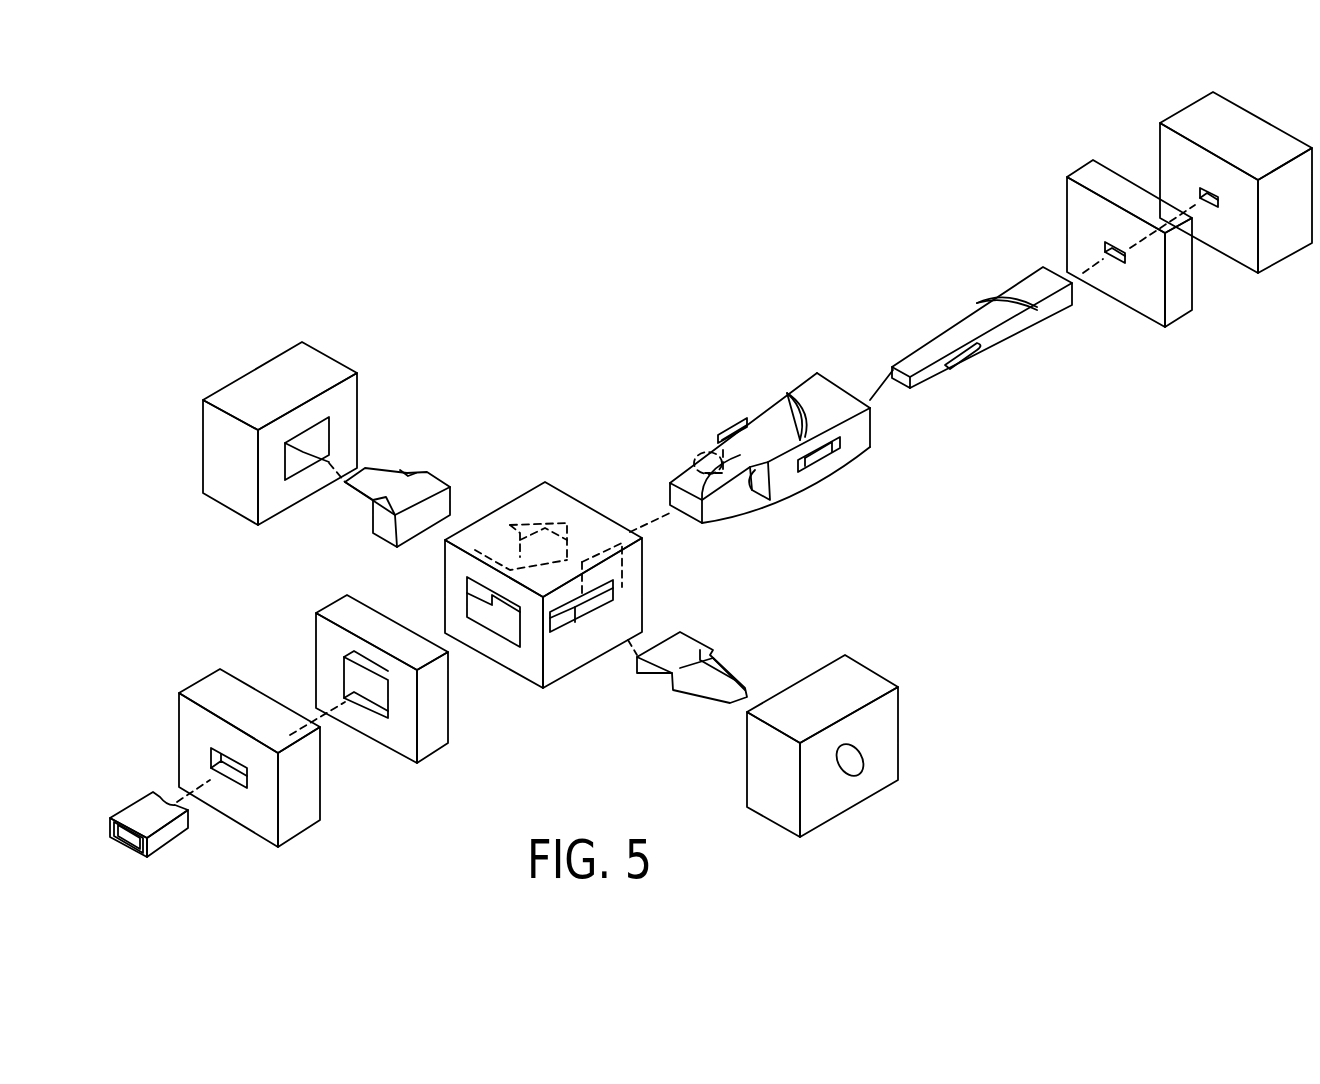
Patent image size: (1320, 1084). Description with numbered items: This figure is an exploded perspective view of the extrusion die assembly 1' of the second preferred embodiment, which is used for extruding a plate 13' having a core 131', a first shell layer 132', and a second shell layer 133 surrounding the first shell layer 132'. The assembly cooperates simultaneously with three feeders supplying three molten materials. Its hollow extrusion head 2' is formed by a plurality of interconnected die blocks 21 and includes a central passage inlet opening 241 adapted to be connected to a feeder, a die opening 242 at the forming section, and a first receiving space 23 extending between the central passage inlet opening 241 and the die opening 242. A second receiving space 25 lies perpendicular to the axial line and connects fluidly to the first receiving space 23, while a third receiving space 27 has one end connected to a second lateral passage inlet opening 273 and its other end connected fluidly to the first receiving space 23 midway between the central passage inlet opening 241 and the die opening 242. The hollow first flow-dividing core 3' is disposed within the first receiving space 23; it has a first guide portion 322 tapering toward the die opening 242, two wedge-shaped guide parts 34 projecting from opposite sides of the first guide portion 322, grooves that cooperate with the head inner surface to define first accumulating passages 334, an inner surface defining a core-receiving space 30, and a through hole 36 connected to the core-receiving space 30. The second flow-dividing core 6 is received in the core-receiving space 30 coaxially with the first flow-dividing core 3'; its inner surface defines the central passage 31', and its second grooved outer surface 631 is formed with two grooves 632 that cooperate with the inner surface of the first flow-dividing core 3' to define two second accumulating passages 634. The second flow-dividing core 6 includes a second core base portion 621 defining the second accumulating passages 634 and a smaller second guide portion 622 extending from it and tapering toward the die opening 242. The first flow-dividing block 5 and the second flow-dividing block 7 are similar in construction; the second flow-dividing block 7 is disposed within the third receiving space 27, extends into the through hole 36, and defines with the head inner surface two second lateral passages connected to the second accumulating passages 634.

The extrusion die assembly 1' is at (698, 511).
The hollow extrusion head 2' is at (543, 619).
The first flow-dividing core 3' is at (759, 443).
The first flow-dividing block 5 is at (435, 466).
The second flow-dividing core 6 is at (1001, 315).
The second flow-dividing block 7 is at (648, 672).
The plate 13' is at (181, 831).
The die blocks 21 is at (742, 469).
The first receiving space 23 is at (500, 627).
The second receiving space 25 is at (497, 540).
The third receiving space 27 is at (587, 627).
The core-receiving space 30 is at (702, 508).
The central passage 31' is at (926, 395).
The wedge-shaped guide parts 34 is at (703, 463).
The through hole 36 is at (822, 460).
The core 131' is at (114, 858).
The first shell layer 132' is at (152, 874).
The second shell layer 133 is at (137, 808).
The central passage inlet opening 241 is at (1212, 203).
The die opening 242 is at (243, 777).
The second lateral passage inlet opening 273 is at (855, 763).
The first guide portion 322 is at (687, 480).
The first accumulating passages 334 is at (747, 450).
The second core base portion 621 is at (1063, 313).
The second guide portion 622 is at (915, 362).
The second grooved outer surface 631 is at (1028, 285).
The grooves 632 is at (1017, 312).
The second accumulating passages 634 is at (950, 343).